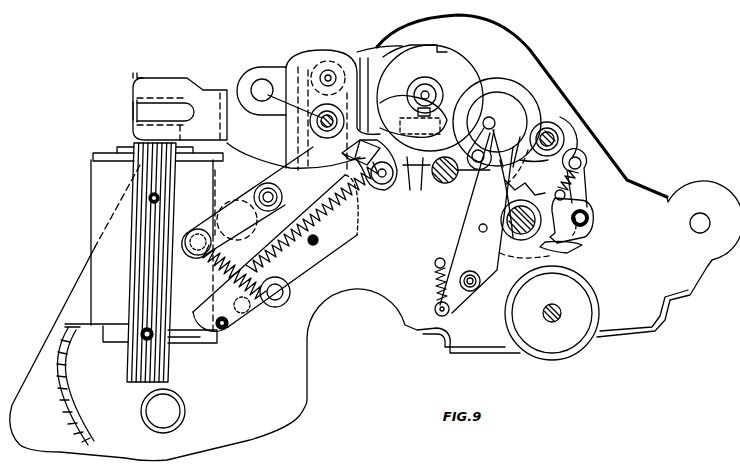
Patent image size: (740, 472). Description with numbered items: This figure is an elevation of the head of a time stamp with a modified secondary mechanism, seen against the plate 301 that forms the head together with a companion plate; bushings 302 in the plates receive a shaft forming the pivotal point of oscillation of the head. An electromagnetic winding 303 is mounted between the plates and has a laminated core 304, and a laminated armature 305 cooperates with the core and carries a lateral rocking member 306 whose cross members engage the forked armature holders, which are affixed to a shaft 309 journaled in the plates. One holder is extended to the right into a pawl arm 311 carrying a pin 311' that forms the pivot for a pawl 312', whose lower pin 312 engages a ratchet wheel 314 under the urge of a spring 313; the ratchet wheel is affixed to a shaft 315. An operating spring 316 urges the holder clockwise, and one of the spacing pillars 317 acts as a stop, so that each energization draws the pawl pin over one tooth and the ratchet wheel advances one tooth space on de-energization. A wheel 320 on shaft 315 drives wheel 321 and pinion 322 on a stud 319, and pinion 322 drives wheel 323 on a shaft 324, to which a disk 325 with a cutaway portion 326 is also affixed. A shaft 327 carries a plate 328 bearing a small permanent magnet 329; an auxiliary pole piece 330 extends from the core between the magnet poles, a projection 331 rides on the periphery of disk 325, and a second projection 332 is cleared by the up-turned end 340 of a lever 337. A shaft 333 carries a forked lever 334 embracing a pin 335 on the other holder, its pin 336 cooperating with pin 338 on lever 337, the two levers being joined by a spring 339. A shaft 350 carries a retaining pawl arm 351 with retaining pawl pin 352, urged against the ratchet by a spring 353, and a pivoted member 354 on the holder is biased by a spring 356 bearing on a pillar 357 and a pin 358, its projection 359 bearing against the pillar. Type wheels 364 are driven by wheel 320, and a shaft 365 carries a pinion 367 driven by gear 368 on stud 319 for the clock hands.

The plate 301 is at (320, 380).
The bushing 302 is at (186, 420).
The electromagnetic winding 303 is at (91, 178).
The laminated core 304 is at (127, 376).
The laminated armature 305 is at (152, 98).
The lateral rocking member 306 is at (133, 112).
The shaft 309 is at (260, 80).
The pawl arm 311 is at (583, 214).
The pin 311' is at (601, 215).
The pin 312 is at (573, 244).
The pawl 312' is at (600, 227).
The spring 313 is at (580, 172).
The ratchet wheel 314 is at (560, 260).
The shaft 315 is at (520, 250).
The operating spring 316 is at (340, 222).
The spacing pillar 317 is at (444, 185).
The stud 319 is at (495, 123).
The wheel 320 is at (485, 283).
The wheel 321 is at (512, 80).
The pinion 322 is at (502, 114).
The wheel 323 is at (468, 60).
The shaft 324 is at (431, 80).
The disk 325 is at (508, 42).
The cutaway portion 326 is at (427, 52).
The shaft 327 is at (330, 70).
The plate 328 is at (287, 68).
The permanent magnet 329 is at (285, 113).
The auxiliary pole piece 330 is at (230, 322).
The projection 331 is at (365, 58).
The second projection 332 is at (342, 152).
The shaft 333 is at (330, 240).
The forked lever 334 is at (253, 172).
The pin 335 is at (293, 150).
The pin 336 is at (266, 207).
The lever 337 is at (230, 210).
The pin 338 is at (205, 231).
The spring 339 is at (210, 273).
The up-turned end 340 is at (378, 174).
The shaft 350 is at (465, 300).
The retaining pawl arm 351 is at (446, 316).
The retaining pawl pin 352 is at (478, 227).
The spring 353 is at (436, 290).
The pivoted member 354 is at (488, 130).
The spring 356 is at (407, 176).
The pillar 357 is at (405, 105).
The pin 358 is at (414, 185).
The projection 359 is at (405, 95).
The type wheels 364 is at (575, 356).
The shaft 365 is at (548, 122).
The pinion 367 is at (570, 130).
The gear 368 is at (523, 112).